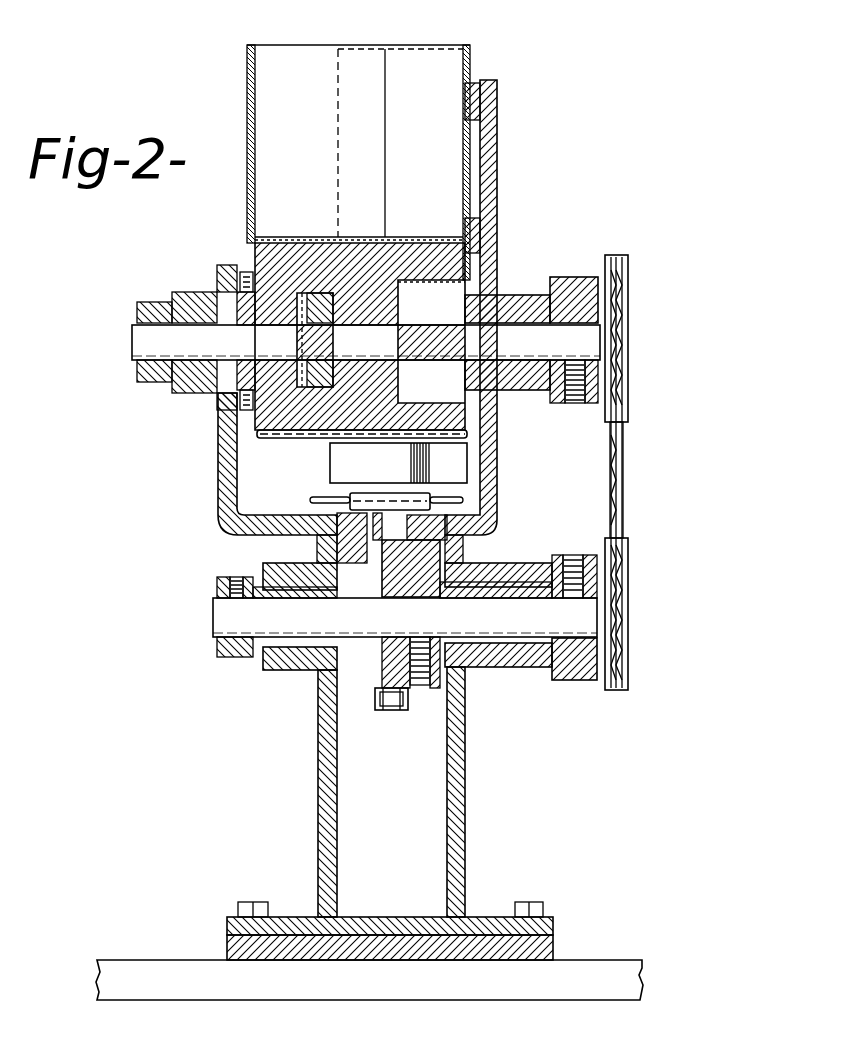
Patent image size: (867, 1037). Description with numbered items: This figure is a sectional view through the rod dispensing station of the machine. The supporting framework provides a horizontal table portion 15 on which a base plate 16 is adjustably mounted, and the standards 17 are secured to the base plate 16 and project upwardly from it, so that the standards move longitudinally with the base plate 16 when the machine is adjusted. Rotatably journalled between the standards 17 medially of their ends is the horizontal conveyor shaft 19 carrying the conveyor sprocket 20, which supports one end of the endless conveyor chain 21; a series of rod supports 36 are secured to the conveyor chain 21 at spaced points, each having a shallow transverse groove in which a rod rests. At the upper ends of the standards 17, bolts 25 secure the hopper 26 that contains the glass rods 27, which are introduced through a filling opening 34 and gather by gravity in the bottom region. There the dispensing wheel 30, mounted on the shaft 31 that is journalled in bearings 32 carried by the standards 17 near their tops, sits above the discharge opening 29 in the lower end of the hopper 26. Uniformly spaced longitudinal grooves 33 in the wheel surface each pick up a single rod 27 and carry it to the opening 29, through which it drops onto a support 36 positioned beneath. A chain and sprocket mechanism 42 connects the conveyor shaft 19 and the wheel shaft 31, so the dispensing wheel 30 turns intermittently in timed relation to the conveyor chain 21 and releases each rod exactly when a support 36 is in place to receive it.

The horizontal table portion 15 is at (157, 974).
The base plate 16 is at (544, 944).
The standards 17 is at (458, 733).
The conveyor shaft 19 is at (222, 612).
The conveyor sprocket 20 is at (432, 567).
The conveyor chain 21 is at (375, 691).
The bolts 25 is at (499, 108).
The hopper 26 is at (472, 63).
The glass rods 27 is at (436, 241).
The opening 29 is at (337, 467).
The dispensing wheel 30 is at (388, 246).
The shaft 31 is at (132, 341).
The bearings 32 is at (518, 305).
The grooves 33 is at (300, 438).
The filling opening 34 is at (424, 119).
The rod supports 36 is at (383, 494).
The chain and sprocket mechanism 42 is at (624, 517).